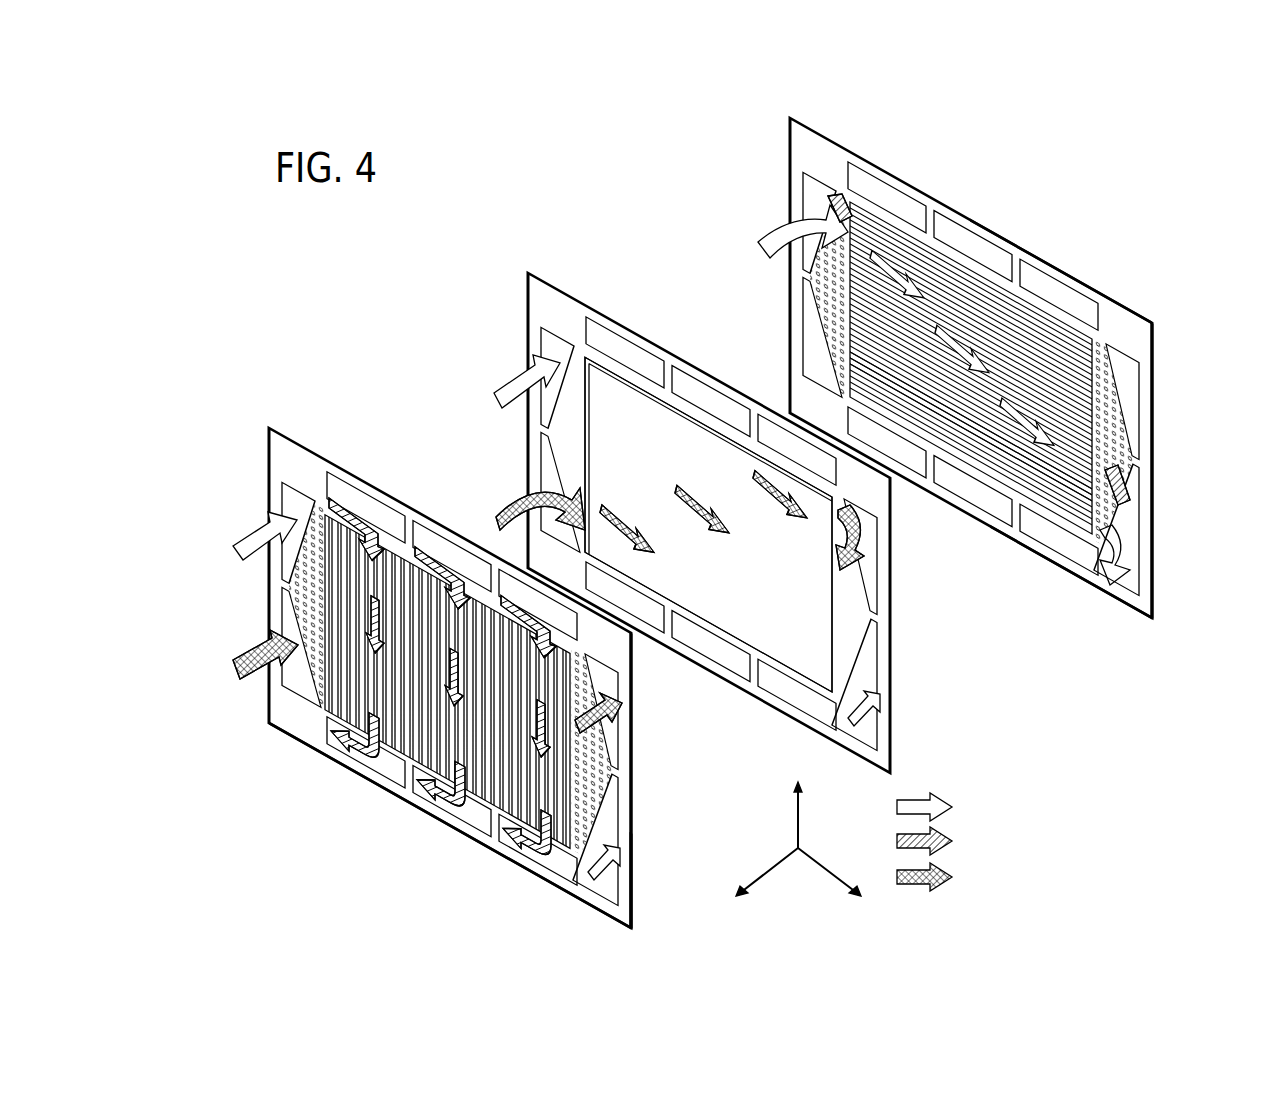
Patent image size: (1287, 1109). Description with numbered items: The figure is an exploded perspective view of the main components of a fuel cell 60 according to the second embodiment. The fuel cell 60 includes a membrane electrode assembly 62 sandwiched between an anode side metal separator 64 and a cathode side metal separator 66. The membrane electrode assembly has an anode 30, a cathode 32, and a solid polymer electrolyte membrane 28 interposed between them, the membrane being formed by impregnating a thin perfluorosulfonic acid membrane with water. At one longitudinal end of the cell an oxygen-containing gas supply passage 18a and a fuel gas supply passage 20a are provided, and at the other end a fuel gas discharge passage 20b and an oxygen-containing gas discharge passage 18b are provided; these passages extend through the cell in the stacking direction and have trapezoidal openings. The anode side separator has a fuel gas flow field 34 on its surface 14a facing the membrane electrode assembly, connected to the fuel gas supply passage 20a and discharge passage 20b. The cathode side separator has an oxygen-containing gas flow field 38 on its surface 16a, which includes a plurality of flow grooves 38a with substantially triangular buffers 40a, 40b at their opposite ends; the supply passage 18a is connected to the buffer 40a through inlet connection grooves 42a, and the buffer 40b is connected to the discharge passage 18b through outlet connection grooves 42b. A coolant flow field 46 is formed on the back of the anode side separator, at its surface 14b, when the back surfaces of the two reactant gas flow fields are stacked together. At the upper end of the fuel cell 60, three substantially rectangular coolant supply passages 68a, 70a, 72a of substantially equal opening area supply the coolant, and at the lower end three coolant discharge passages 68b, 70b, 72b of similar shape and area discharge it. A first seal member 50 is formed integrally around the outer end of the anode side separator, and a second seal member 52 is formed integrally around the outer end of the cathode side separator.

The fuel cell 60 is at (306, 277).
The anode side metal separator 64 is at (266, 426).
The membrane electrode assembly 62 is at (526, 273).
The cathode side metal separator 66 is at (790, 119).
The surface of anode side metal separator 14a is at (633, 909).
The surface of anode side metal separator 14b is at (633, 883).
The surface of cathode side metal separator 16a is at (1128, 592).
The oxygen-containing gas supply passage 18a is at (292, 493).
The oxygen-containing gas discharge passage 18b is at (612, 800).
The fuel gas supply passage 20a is at (285, 606).
The fuel gas discharge passage 20b is at (612, 735).
The solid polymer electrolyte membrane 28 is at (800, 719).
The anode 30 is at (706, 603).
The cathode 32 is at (742, 622).
The fuel gas flow field 34 is at (256, 528).
The oxygen-containing gas flow field 38 is at (946, 306).
The flow grooves 38a is at (1010, 467).
The buffer 40a is at (825, 292).
The buffer 40b is at (1112, 422).
The inlet connection grooves 42a is at (826, 209).
The outlet connection grooves 42b is at (1125, 490).
The coolant flow field 46 is at (345, 690).
The first seal member 50 is at (590, 905).
The second seal member 52 is at (1106, 297).
The coolant supply passage 68a is at (355, 492).
The coolant supply passage 70a is at (425, 540).
The coolant supply passage 72a is at (520, 596).
The coolant discharge passage 68b is at (332, 758).
The coolant discharge passage 70b is at (420, 790).
The coolant discharge passage 72b is at (497, 835).